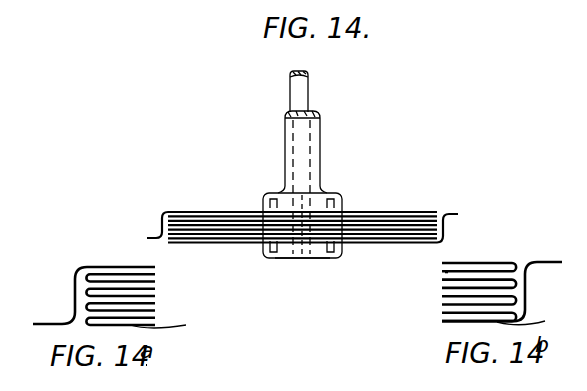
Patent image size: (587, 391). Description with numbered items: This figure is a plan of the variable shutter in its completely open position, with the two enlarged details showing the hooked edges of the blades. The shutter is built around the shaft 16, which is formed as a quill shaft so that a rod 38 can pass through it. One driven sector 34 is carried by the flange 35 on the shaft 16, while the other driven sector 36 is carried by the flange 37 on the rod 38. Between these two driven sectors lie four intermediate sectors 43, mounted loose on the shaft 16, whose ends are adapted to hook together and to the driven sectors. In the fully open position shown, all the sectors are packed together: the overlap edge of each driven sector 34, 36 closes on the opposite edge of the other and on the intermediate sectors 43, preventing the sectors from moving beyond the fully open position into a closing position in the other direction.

In FIG. 14, the rod 38 is at (299, 85).
In FIG. 14, the shaft 16 is at (285, 134).
In FIG. 14, the flange 35 is at (316, 200).
In FIG. 14, the flange 37 is at (307, 250).
In FIG. 14, the driven sector 34 is at (163, 214).
In FIG. 14A, the driven sector 34 is at (116, 264).
In FIG. 14B, the driven sector 34 is at (484, 262).
In FIG. 14, the driven sector 36 is at (459, 214).
In FIG. 14A, the driven sector 36 is at (171, 320).
In FIG. 14B, the driven sector 36 is at (535, 321).
In FIG. 14B, the intermediate sectors 43 is at (442, 300).